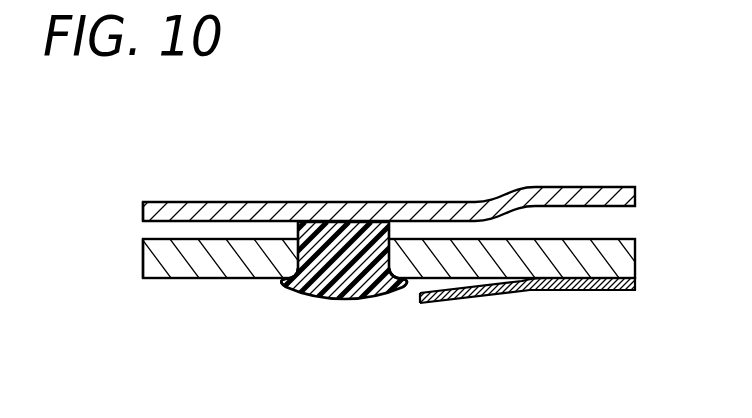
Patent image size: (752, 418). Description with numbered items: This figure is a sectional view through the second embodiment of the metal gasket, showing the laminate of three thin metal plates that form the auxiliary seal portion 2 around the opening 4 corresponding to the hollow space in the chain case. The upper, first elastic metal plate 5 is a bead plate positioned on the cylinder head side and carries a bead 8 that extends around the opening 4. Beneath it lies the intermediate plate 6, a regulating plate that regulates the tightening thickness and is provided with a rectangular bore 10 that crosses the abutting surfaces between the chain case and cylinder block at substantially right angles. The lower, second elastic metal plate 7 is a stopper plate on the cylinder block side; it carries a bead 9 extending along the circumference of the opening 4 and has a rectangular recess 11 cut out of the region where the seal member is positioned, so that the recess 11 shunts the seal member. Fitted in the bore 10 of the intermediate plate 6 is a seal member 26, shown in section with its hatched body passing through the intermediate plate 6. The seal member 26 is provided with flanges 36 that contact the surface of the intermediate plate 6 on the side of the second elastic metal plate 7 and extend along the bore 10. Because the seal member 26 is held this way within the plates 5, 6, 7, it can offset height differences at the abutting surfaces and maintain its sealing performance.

The auxiliary seal portion 2 is at (557, 188).
The opening 4 is at (143, 213).
The first elastic metal plate 5 is at (259, 202).
The intermediate plate 6 is at (622, 262).
The second elastic metal plate 7 is at (609, 288).
The bead 8 is at (521, 196).
The bead 9 is at (518, 292).
The rectangular bore 10 is at (343, 256).
The rectangular recess 11 is at (420, 300).
The seal member 26 is at (350, 280).
The flange 36 is at (287, 292).